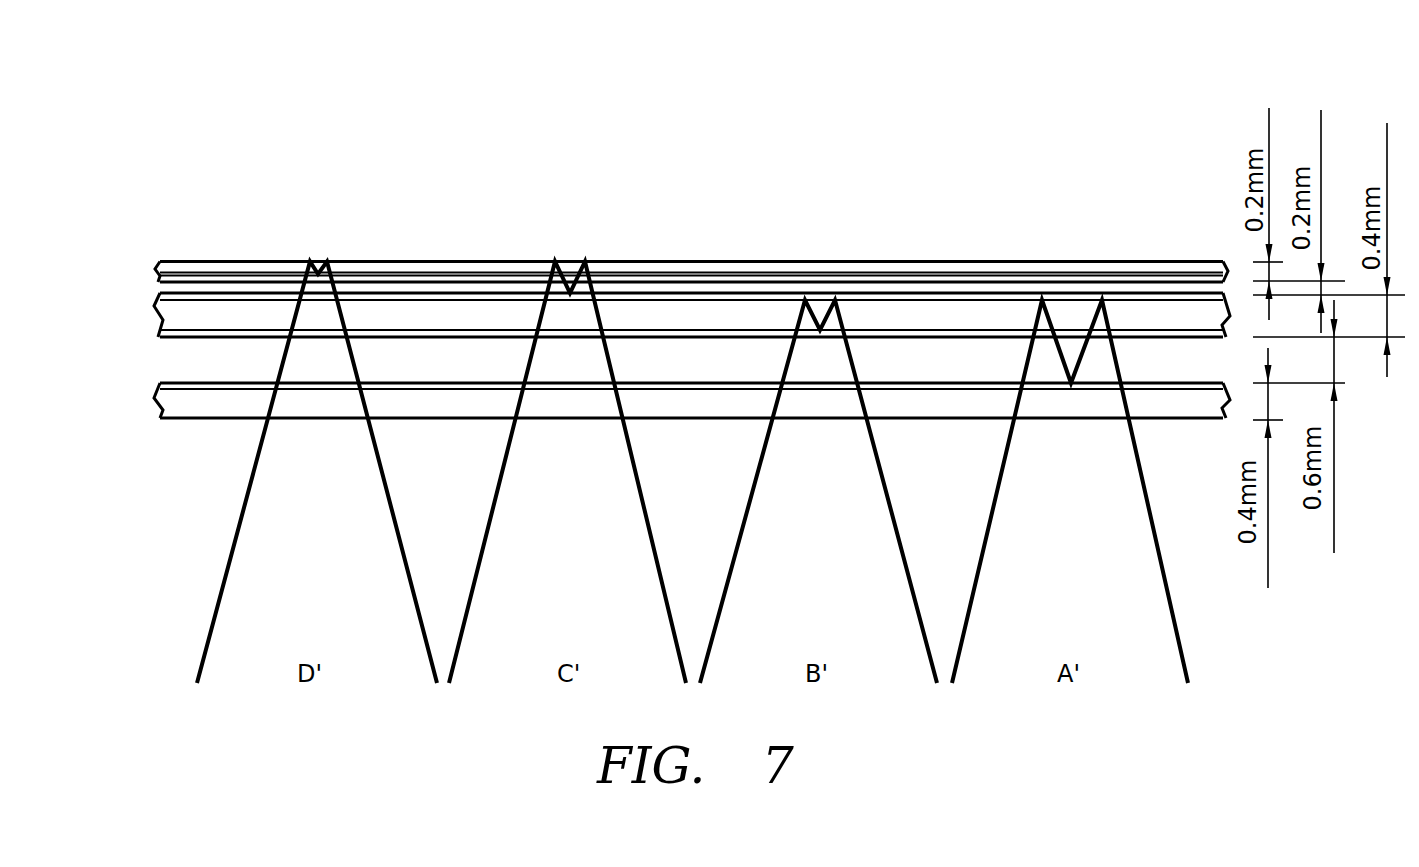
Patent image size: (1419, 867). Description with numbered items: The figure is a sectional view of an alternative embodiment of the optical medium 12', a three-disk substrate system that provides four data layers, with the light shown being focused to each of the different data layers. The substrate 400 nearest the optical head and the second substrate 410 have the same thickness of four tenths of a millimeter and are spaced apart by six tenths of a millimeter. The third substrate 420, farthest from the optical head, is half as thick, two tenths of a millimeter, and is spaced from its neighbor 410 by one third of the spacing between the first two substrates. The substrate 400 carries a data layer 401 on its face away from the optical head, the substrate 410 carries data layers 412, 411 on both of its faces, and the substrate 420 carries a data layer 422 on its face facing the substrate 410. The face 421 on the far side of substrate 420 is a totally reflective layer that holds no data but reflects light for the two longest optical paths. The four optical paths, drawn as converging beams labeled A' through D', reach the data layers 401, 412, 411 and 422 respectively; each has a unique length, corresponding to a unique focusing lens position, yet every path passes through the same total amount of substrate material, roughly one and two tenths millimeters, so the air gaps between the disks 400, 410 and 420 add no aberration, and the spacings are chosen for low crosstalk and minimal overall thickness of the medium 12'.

The optical medium 12' is at (636, 234).
The substrate 400 is at (158, 403).
The data layer 401 is at (494, 382).
The substrate 410 is at (158, 316).
The data layer 411 is at (277, 292).
The data layer 412 is at (392, 330).
The substrate 420 is at (158, 268).
The face 421 is at (637, 262).
The data layer 422 is at (176, 270).